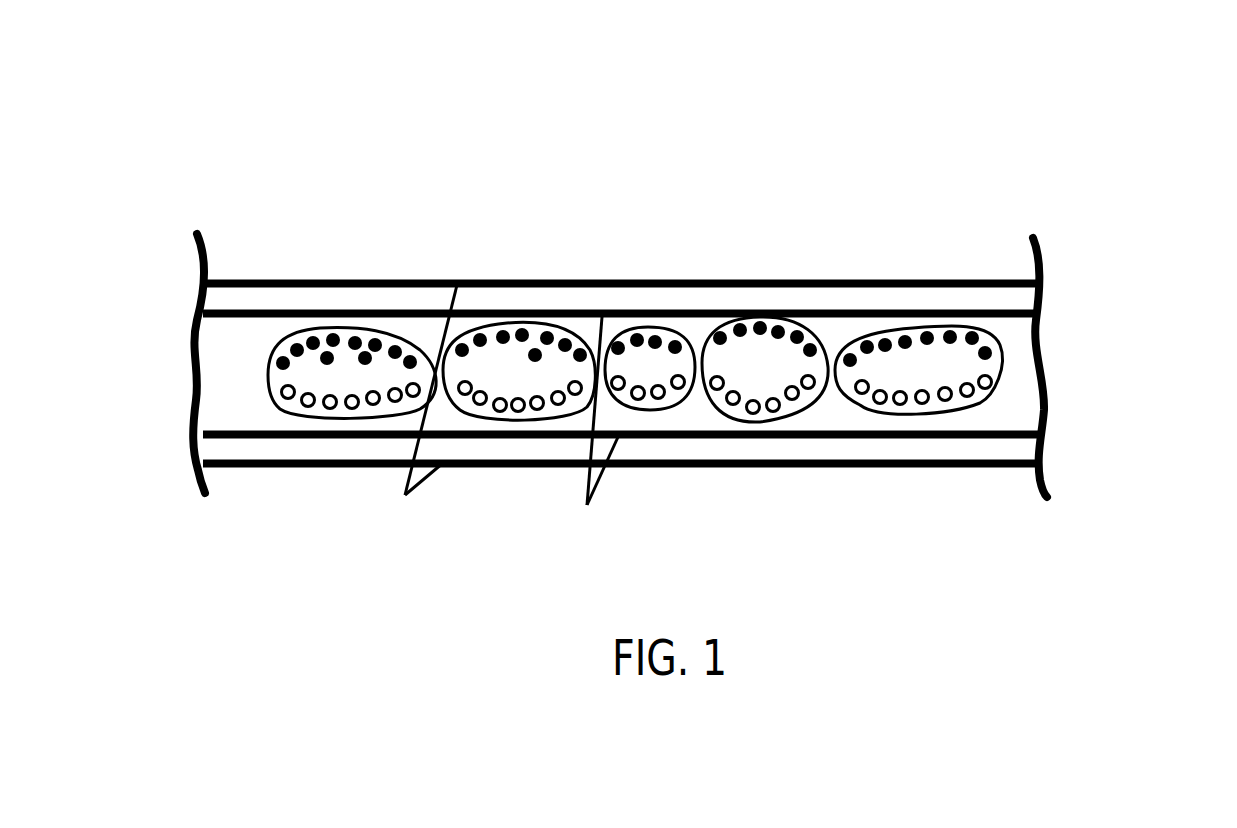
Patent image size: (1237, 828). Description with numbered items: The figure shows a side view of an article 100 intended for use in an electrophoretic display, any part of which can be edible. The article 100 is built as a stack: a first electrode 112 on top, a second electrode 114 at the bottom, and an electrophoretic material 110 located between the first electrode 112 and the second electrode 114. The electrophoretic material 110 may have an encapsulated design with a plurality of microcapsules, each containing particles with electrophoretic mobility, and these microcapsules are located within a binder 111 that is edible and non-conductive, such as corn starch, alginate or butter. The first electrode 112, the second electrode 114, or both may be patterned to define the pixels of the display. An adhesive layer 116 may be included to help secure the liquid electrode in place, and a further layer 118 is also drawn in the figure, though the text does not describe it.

The article 100 is at (398, 154).
The electrophoretic material 110 is at (741, 313).
The binder 111 is at (695, 323).
The first electrode 112 is at (1002, 297).
The second electrode 114 is at (1015, 447).
The adhesive layer 116 is at (405, 495).
The second boundary line 118 is at (587, 505).